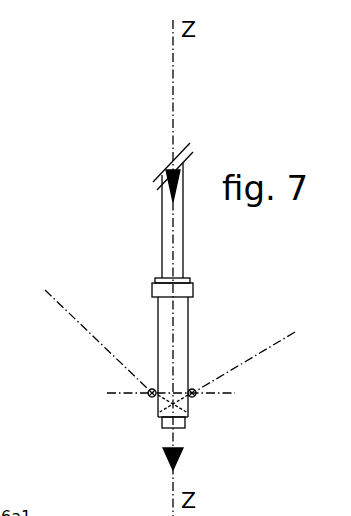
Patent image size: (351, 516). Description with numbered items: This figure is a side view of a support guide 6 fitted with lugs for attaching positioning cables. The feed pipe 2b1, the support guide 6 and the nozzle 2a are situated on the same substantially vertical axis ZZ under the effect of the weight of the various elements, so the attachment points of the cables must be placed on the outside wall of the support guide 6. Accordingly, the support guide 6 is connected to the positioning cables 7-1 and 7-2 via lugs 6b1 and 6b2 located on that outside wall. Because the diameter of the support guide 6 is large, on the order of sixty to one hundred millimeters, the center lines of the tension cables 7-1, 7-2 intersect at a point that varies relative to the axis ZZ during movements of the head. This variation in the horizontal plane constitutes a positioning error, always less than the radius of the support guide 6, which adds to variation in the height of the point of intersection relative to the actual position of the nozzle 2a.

The feed pipe 2b1 is at (162, 260).
The support guide 6 is at (188, 330).
The nozzle 2a is at (186, 429).
The lug 6b1 is at (152, 398).
The lug 6b2 is at (193, 398).
The positioning cable 7-1 is at (72, 313).
The positioning cable 7-2 is at (296, 334).